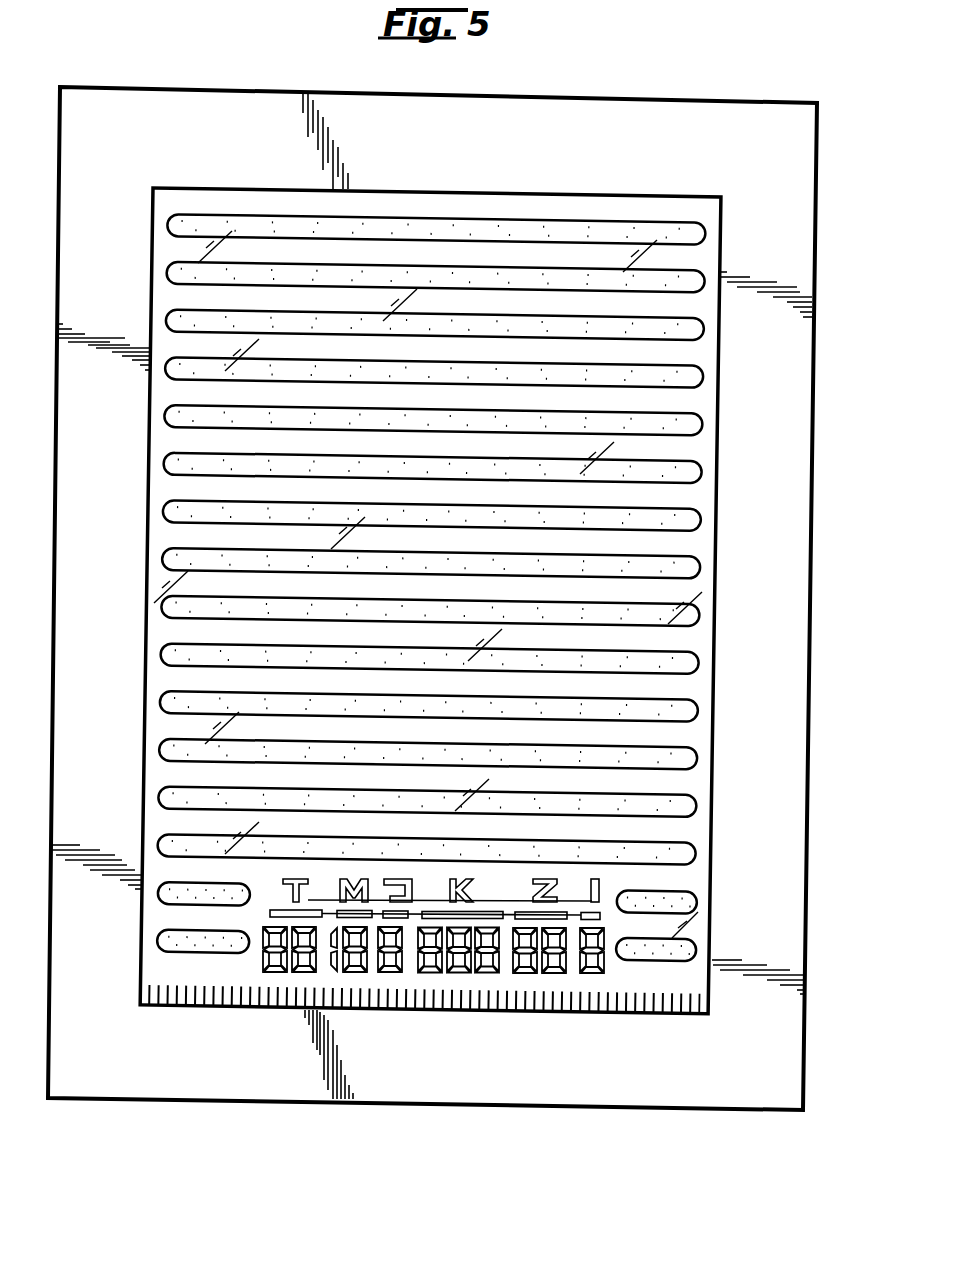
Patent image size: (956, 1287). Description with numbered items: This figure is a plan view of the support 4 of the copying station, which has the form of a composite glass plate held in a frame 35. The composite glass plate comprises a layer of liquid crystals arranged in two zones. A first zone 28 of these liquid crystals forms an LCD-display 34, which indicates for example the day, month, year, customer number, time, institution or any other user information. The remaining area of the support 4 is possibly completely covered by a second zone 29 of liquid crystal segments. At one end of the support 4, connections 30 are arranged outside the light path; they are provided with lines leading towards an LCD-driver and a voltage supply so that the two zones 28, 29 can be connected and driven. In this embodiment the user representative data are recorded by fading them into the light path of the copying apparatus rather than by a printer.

The support 4 is at (637, 196).
The first zone 28 is at (257, 948).
The second zone 29 is at (684, 832).
The connections 30 is at (450, 1003).
The LCD-display 34 is at (604, 966).
The frame 35 is at (530, 1087).